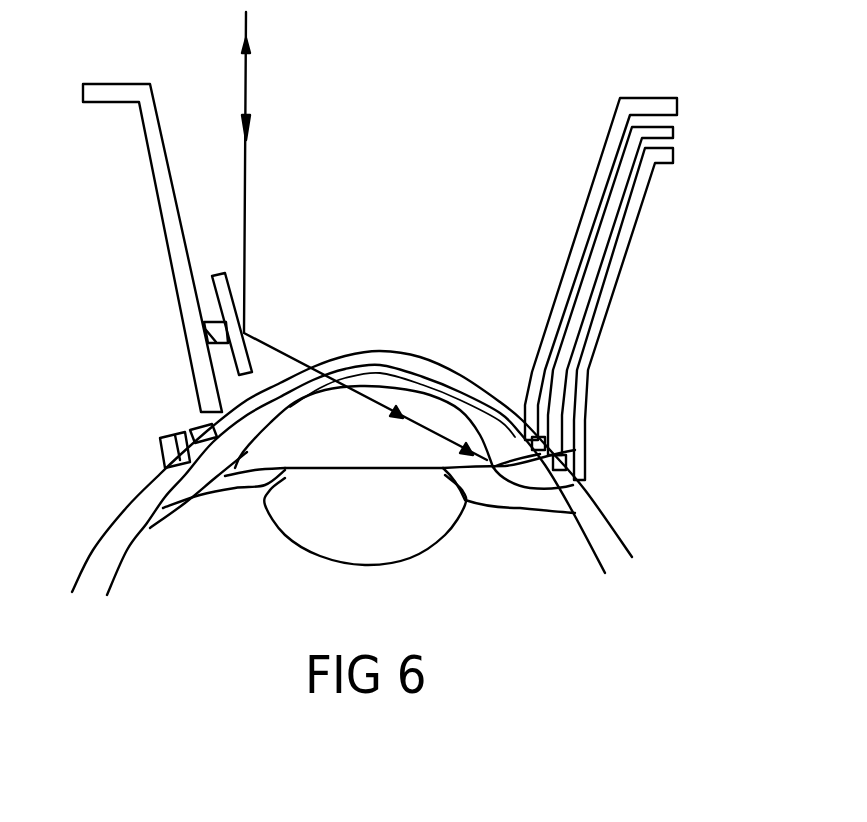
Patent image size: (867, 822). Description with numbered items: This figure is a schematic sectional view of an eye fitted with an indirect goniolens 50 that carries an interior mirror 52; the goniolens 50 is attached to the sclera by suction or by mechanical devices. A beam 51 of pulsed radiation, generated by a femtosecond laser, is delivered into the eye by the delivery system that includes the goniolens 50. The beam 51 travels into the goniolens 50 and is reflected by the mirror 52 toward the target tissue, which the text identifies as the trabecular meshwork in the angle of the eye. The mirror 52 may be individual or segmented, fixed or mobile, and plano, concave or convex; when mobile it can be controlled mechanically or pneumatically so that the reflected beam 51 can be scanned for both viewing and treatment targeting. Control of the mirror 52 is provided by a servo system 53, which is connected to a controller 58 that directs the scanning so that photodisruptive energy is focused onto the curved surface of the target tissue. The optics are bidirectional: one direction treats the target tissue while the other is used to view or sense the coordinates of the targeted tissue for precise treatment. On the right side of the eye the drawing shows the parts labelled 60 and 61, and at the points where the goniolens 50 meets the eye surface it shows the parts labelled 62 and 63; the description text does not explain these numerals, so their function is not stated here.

The indirect goniolens 50 is at (163, 200).
The beam 51 is at (246, 79).
The mirror 52 is at (212, 280).
The servo system 53 is at (207, 323).
The controller 58 is at (205, 338).
The outer hook 60 is at (653, 121).
The inner hook 61 is at (653, 143).
The clamp 62 is at (183, 427).
The clamp block 63 is at (165, 455).